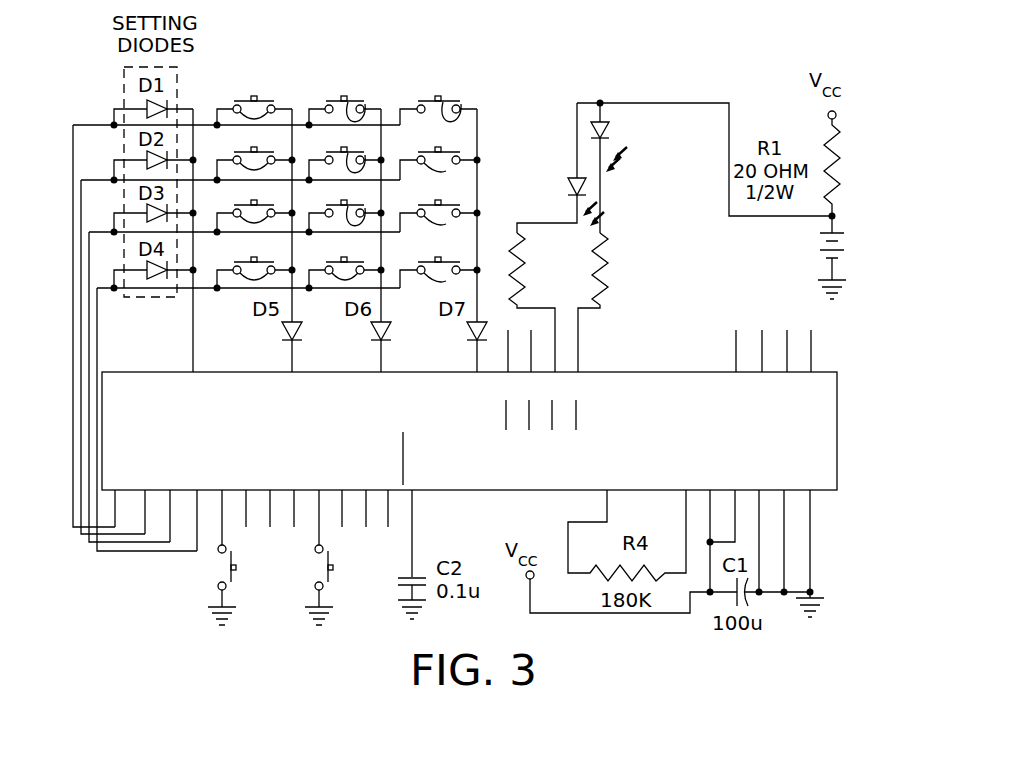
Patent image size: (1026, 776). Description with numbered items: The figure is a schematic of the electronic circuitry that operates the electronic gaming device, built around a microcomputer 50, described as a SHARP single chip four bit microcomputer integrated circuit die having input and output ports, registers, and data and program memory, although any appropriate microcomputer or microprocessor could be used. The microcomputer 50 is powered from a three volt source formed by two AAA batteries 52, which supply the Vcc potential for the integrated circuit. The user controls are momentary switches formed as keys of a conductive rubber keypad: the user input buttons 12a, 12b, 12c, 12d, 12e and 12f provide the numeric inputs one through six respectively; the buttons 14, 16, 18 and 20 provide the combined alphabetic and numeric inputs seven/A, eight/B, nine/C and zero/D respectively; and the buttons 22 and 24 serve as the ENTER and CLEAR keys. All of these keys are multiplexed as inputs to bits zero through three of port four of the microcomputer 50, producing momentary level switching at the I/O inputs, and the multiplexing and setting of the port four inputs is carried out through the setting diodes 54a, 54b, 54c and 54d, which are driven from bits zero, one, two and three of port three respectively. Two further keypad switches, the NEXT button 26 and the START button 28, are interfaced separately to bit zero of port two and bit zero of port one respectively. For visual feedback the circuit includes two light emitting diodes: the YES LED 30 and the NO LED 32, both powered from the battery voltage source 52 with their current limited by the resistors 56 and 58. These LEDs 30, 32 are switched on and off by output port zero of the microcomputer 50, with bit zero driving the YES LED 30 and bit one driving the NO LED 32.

The setting diode 54a is at (127, 108).
The setting diode 54b is at (143, 160).
The setting diode 54c is at (143, 212).
The setting diode 54d is at (143, 268).
The button 16 is at (231, 105).
The button 18 is at (231, 157).
The button 22 is at (266, 205).
The button 24 is at (253, 275).
The button 14 is at (344, 273).
The user input button 12a is at (433, 168).
The user input button 12b is at (433, 220).
The user input button 12c is at (443, 276).
The user input button 12d is at (370, 100).
The user input button 12e is at (364, 170).
The user input button 12f is at (364, 222).
The button 20 is at (462, 107).
The LED 30 is at (604, 128).
The LED 32 is at (572, 196).
The resistor 56 is at (600, 242).
The resistor 58 is at (516, 248).
The AAA batteries 52 is at (838, 232).
The microcomputer 50 is at (676, 372).
The NEXT button 26 is at (229, 578).
The START button 28 is at (326, 578).